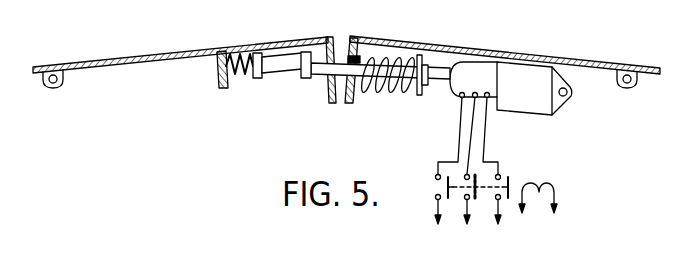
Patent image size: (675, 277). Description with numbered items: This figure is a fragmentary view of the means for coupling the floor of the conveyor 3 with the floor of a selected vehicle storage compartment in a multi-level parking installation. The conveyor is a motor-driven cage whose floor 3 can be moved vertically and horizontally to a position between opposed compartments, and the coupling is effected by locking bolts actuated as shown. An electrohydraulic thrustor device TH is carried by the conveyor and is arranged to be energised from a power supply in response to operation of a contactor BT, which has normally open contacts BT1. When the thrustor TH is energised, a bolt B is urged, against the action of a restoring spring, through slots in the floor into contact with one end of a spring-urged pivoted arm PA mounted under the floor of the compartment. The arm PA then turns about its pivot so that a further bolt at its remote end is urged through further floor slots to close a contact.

The floor of the conveyor 3 is at (462, 58).
The spring-urged pivoted arm PA is at (305, 78).
The bolt B is at (325, 70).
The electrohydraulic thrustor device TH is at (550, 113).
The contactor BT is at (538, 187).
The normally open contacts BT1 is at (481, 199).